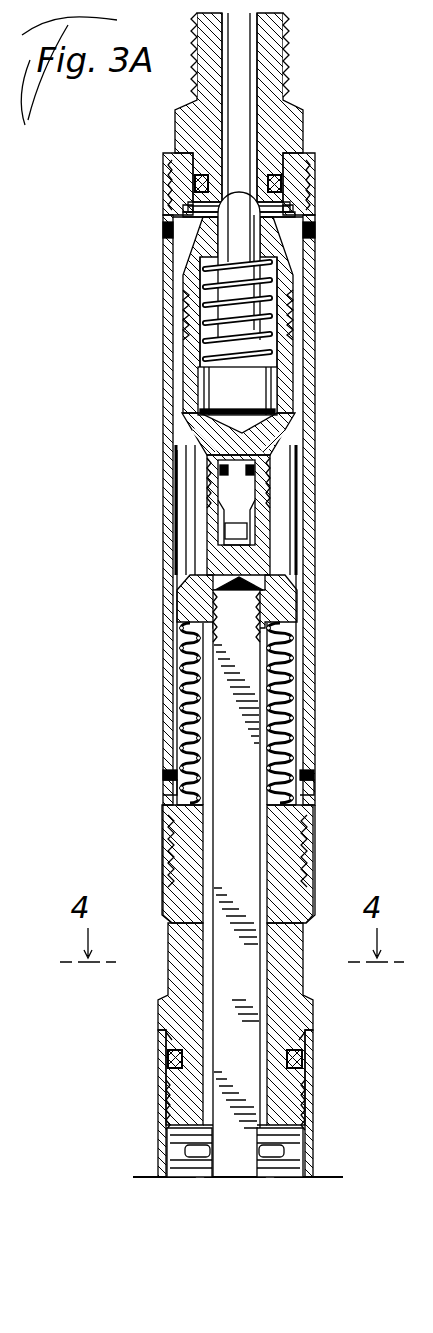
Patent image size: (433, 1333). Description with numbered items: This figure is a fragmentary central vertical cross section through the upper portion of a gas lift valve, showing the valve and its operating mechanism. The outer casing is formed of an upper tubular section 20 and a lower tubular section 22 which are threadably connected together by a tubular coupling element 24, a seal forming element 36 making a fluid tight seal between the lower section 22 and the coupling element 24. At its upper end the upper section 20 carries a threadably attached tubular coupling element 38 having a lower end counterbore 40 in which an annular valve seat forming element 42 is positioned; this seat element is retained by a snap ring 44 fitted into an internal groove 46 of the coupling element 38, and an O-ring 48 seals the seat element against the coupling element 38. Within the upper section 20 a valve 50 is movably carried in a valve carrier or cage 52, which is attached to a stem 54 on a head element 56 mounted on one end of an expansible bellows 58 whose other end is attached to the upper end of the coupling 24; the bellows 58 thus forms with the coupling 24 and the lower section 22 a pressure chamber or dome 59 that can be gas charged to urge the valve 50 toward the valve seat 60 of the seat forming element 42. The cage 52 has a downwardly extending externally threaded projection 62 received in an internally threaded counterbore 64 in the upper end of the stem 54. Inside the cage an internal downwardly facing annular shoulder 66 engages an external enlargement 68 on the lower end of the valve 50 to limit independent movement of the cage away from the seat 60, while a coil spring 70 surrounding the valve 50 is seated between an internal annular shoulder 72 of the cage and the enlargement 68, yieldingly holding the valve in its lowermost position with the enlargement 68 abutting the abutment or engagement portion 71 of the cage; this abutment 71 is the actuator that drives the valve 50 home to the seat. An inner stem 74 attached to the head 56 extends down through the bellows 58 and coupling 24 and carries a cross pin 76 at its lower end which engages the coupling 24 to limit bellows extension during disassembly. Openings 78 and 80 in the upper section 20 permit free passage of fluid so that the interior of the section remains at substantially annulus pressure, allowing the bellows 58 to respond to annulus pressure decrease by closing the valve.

The upper tubular section 20 is at (312, 440).
The lower tubular section 22 is at (310, 1107).
The tubular coupling element 24 is at (290, 973).
The seal forming element 36 is at (303, 1062).
The tubular coupling element 38 is at (297, 107).
The lower end counterbore 40 is at (277, 157).
The annular valve seat forming element 42 is at (197, 152).
The snap ring 44 is at (190, 207).
The internal groove 46 is at (296, 212).
The O-ring 48 is at (282, 186).
The valve 50 is at (230, 229).
The valve carrier or cage 52 is at (183, 286).
The stem 54 is at (215, 492).
The head element 56 is at (178, 605).
The bellows 58 is at (190, 679).
The expansible pressure chamber or dome 59 is at (297, 698).
The valve seat 60 is at (290, 204).
The externally threaded projection 62 is at (246, 514).
The internally threaded counterbore 64 is at (227, 530).
The annular shoulder 66 is at (280, 352).
The external enlargement 68 is at (208, 384).
The coil spring 70 is at (280, 292).
The abutment or engagement portion 71 is at (285, 415).
The internal annular shoulder 72 is at (275, 266).
The inner stem 74 is at (244, 857).
The cross pin 76 is at (303, 1142).
The openings 78 is at (318, 233).
The openings 80 is at (305, 784).